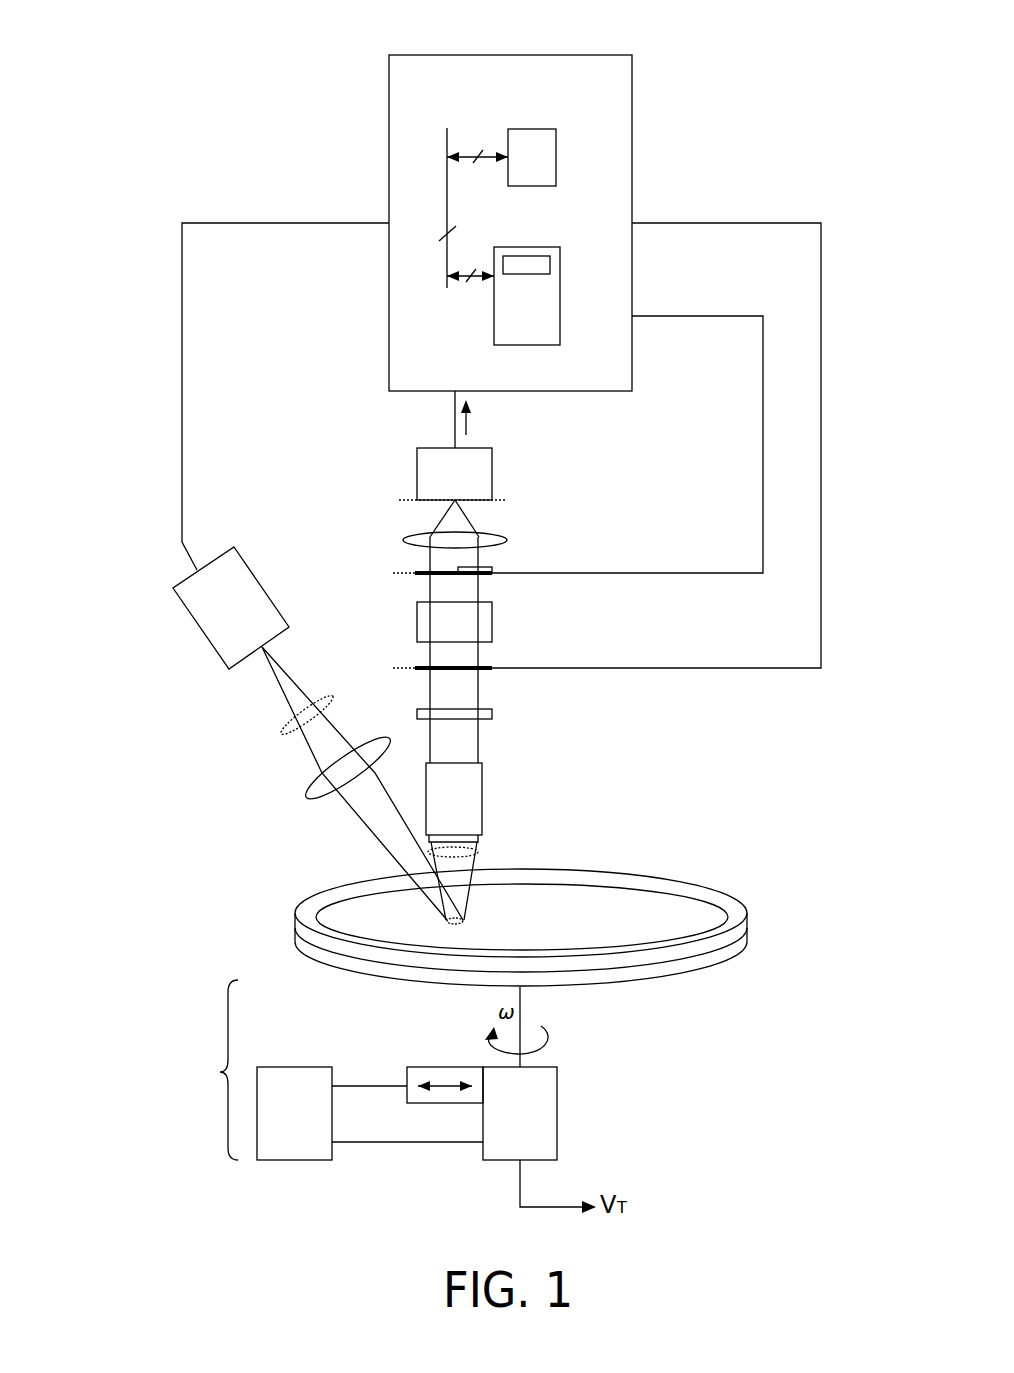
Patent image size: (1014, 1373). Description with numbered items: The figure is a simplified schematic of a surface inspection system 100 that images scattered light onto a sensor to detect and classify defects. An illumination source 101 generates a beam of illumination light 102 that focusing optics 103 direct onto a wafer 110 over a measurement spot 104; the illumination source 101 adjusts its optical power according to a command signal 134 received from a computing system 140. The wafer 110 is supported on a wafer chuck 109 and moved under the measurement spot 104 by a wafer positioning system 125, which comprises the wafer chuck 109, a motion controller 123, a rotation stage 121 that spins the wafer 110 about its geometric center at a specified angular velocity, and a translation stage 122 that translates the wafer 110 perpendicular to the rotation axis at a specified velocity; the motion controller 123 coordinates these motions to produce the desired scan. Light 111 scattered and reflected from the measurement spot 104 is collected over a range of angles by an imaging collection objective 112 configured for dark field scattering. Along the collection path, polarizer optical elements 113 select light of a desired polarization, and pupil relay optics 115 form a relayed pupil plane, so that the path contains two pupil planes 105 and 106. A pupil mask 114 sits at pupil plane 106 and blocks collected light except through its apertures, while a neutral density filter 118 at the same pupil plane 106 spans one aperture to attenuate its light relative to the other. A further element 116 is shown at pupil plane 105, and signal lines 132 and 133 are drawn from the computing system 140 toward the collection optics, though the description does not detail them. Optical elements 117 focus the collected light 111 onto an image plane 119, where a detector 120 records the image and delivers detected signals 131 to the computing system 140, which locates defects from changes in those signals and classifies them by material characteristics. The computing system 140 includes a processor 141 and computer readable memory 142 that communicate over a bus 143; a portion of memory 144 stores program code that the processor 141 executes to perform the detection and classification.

The surface inspection system 100 is at (142, 58).
The illumination source 101 is at (246, 616).
The beam of illumination light 102 is at (280, 732).
The focusing optics 103 is at (308, 796).
The measurement spot 104 is at (460, 926).
The pupil plane 105 is at (400, 672).
The pupil plane 106 is at (400, 578).
The wafer chuck 109 is at (295, 930).
The wafer 110 is at (333, 908).
The scattered light 111 is at (480, 853).
The imaging collection objective 112 is at (470, 808).
The polarizer optical elements 113 is at (492, 714).
The pupil mask 114 is at (420, 572).
The pupil relay optics 115 is at (492, 622).
The selectable optical element 116 is at (490, 667).
The optical elements 117 is at (507, 540).
The neutral density filter 118 is at (492, 567).
The image plane 119 is at (505, 503).
The detector 120 is at (471, 483).
The rotation stage 121 is at (536, 1121).
The translation stage 122 is at (407, 1067).
The motion controller 123 is at (310, 1121).
The wafer positioning system 125 is at (218, 1072).
The detected signals 131 is at (466, 420).
The control signal 132 is at (695, 307).
The control signal 133 is at (695, 213).
The command signal 134 is at (323, 206).
The computing system 140 is at (535, 82).
The processor 141 is at (556, 157).
The computer readable memory 142 is at (494, 321).
The bus 143 is at (447, 206).
The memory 144 is at (550, 265).